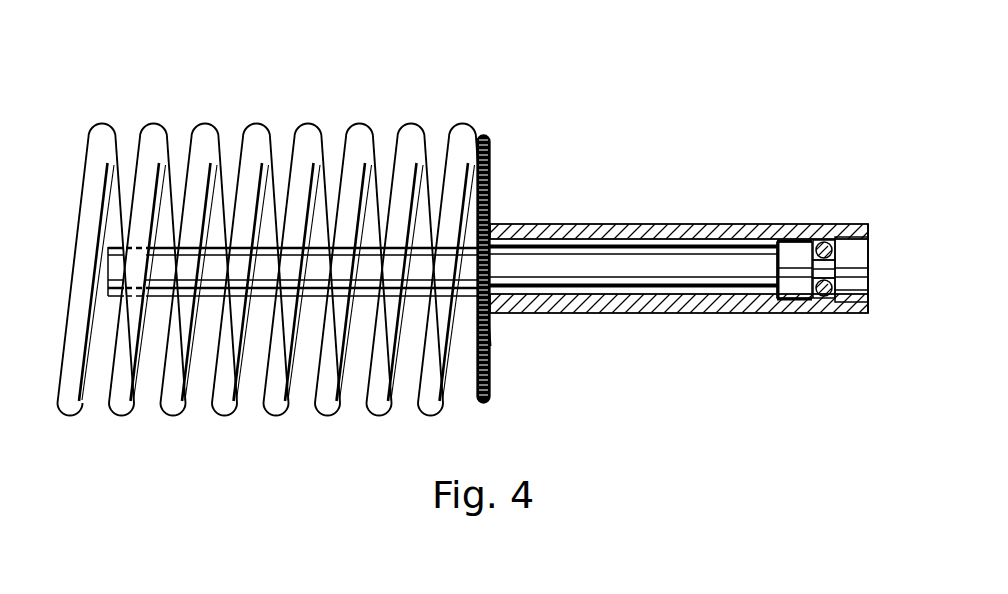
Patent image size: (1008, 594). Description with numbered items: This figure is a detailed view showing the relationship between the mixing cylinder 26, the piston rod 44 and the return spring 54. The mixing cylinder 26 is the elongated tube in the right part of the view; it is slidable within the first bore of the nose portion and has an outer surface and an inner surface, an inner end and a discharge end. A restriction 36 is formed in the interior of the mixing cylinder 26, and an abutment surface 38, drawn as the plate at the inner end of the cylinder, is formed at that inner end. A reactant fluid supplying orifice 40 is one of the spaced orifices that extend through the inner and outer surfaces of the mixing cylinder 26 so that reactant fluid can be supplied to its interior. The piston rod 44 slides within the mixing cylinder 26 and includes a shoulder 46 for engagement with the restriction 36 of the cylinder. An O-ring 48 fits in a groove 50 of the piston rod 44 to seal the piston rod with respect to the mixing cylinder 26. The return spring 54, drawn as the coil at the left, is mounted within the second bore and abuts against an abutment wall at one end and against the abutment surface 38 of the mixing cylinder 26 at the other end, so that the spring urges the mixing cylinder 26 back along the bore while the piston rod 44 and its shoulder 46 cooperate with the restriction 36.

The return spring 54 is at (310, 135).
The abutment surface 38 is at (491, 160).
The restriction 36 is at (502, 224).
The mixing cylinder 26 is at (583, 225).
The piston rod 44 is at (653, 270).
The reactant fluid supplying orifice 40 is at (573, 313).
The shoulder 46 is at (787, 224).
The O-ring 48 is at (827, 224).
The groove 50 is at (837, 257).